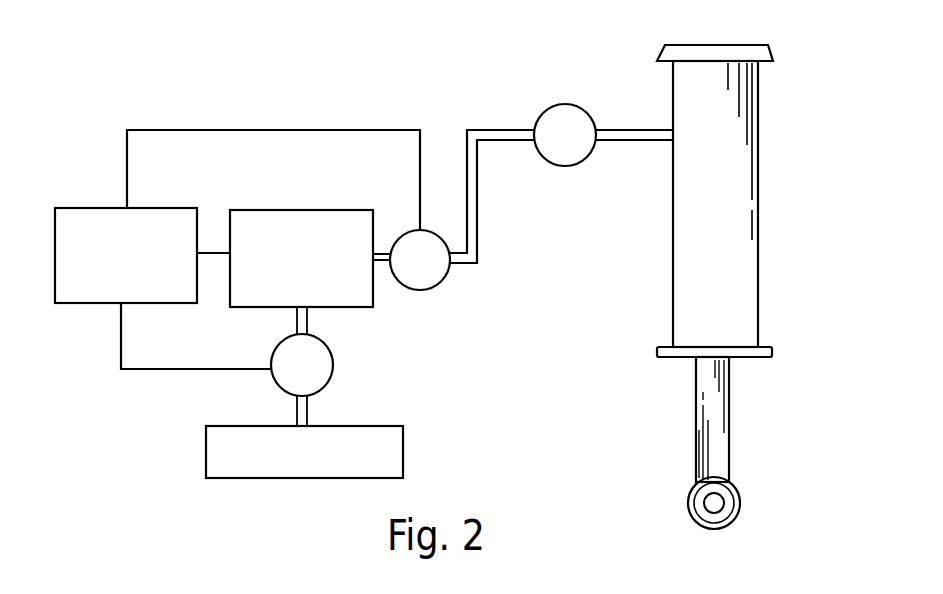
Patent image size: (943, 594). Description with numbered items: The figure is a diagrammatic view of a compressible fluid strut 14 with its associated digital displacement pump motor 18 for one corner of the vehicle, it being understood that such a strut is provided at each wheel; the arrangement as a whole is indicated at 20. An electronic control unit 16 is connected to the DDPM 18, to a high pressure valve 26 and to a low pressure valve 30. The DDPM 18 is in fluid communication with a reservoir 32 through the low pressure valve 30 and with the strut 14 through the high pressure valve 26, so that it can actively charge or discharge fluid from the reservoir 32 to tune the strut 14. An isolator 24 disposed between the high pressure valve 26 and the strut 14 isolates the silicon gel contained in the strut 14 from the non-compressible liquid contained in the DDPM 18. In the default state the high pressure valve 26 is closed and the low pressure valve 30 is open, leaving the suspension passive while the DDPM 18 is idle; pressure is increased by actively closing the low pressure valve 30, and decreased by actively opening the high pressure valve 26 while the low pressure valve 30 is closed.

The hydraulic actuator system 20 is at (195, 83).
The electronic control unit 16 is at (58, 305).
The digital displacement pump motor 18 is at (362, 307).
The high pressure valve 26 is at (450, 272).
The low pressure valve 30 is at (333, 372).
The reservoir 32 is at (206, 457).
The isolator 24 is at (560, 104).
The compressible fluid strut 14 is at (673, 193).